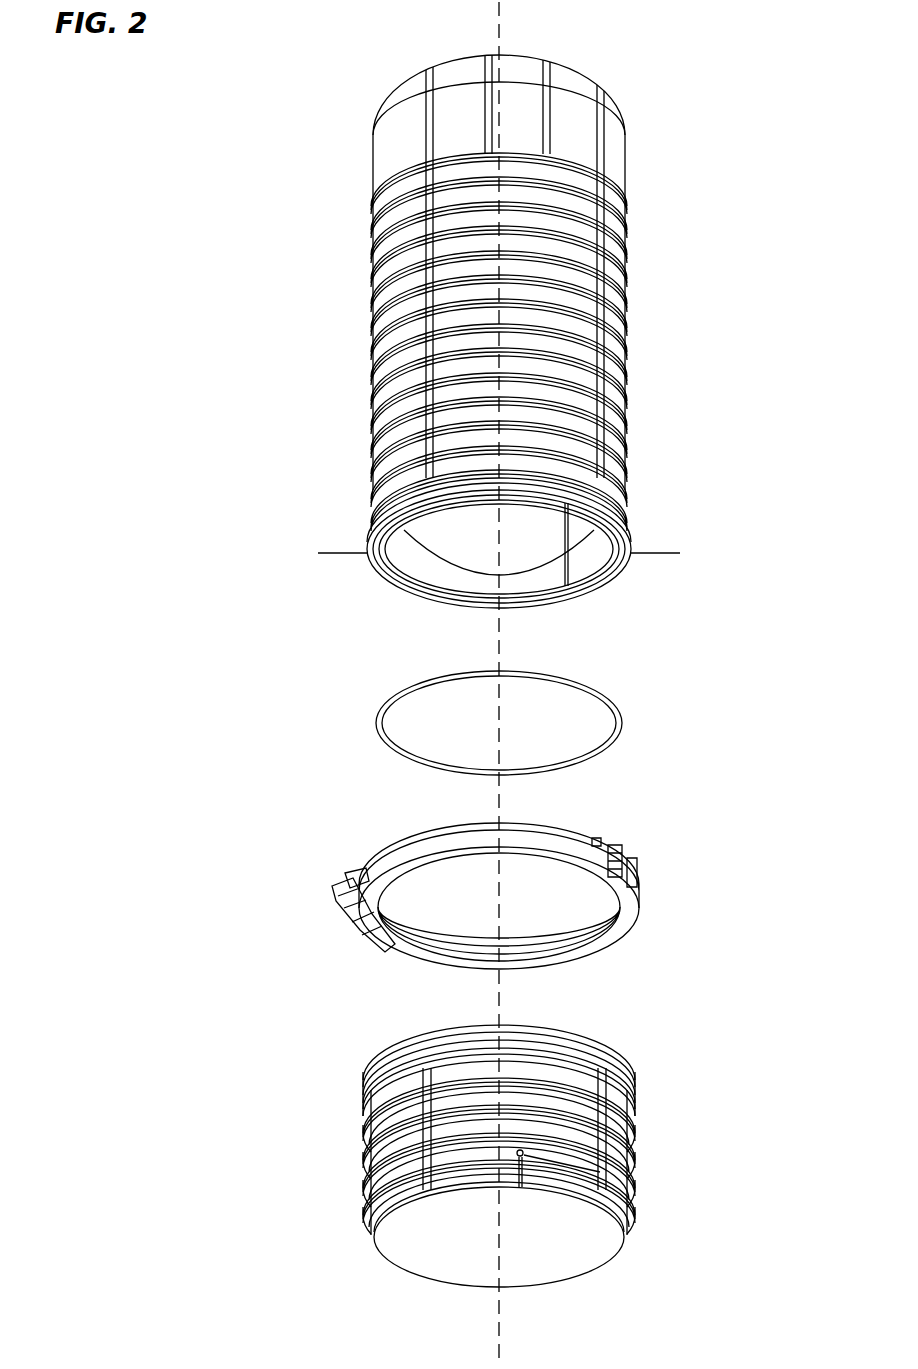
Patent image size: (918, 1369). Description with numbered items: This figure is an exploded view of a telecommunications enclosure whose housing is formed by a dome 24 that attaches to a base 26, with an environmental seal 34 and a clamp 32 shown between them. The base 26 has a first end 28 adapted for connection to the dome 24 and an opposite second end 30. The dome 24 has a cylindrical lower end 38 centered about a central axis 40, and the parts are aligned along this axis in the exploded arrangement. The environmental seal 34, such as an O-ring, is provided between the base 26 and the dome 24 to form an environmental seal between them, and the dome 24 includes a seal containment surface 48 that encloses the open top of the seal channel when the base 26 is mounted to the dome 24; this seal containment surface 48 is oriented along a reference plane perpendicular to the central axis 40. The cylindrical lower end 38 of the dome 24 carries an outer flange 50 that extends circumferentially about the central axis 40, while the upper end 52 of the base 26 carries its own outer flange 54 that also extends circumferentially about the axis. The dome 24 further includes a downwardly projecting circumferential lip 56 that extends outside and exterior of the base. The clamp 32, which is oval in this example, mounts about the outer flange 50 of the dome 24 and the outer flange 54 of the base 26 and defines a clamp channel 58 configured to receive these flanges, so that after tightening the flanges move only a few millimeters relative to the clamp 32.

The dome 24 is at (520, 346).
The base 26 is at (509, 1151).
The first end 28 is at (586, 1036).
The second end 30 is at (423, 1280).
The clamp 32 is at (531, 896).
The environmental seal 34 is at (622, 720).
The cylindrical lower end 38 is at (598, 591).
The central axis 40 is at (499, 613).
The seal containment surface 48 is at (628, 566).
The outer flange 50 is at (566, 504).
The upper end 52 is at (405, 1036).
The outer flange 54 is at (440, 1032).
The circumferential lip 56 is at (420, 600).
The clamp channel 58 is at (430, 943).